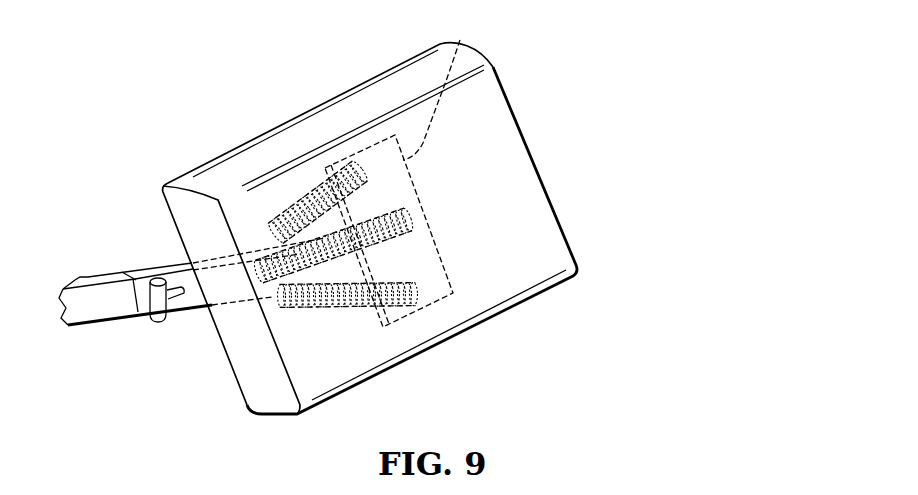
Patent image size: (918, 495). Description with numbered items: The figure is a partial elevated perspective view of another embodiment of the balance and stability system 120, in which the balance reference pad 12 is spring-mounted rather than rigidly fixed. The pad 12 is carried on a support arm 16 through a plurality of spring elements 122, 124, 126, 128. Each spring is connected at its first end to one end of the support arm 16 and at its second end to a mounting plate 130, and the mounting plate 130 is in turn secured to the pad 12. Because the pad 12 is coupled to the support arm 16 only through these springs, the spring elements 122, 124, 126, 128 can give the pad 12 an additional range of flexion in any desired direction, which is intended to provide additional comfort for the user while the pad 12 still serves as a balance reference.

The balance reference pad 12 is at (506, 93).
The support arm 16 is at (120, 277).
The balance and stability system 120 is at (281, 88).
The spring element 122 is at (303, 197).
The spring element 124 is at (400, 240).
The spring element 126 is at (330, 272).
The spring element 128 is at (395, 322).
The mounting plate 130 is at (460, 40).